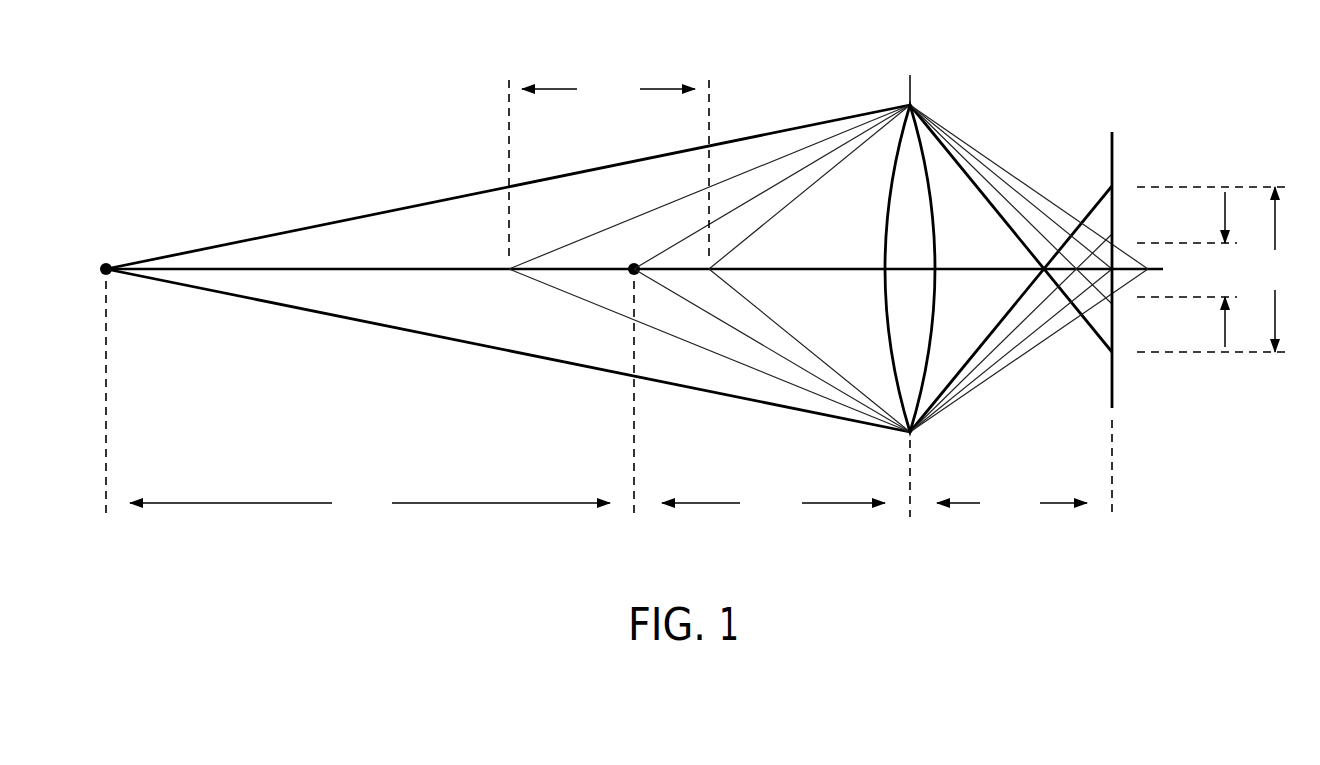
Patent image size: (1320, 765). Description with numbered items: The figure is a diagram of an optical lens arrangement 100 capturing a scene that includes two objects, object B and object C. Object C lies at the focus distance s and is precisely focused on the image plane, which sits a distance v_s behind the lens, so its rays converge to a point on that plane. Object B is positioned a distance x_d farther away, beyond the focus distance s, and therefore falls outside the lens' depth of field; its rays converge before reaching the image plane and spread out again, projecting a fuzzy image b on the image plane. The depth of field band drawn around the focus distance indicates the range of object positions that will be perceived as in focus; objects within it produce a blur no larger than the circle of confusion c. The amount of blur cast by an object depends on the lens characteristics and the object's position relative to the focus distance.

The imaging system / optical arrangement 100 is at (331, 100).
The object B is at (106, 252).
The object C is at (632, 253).